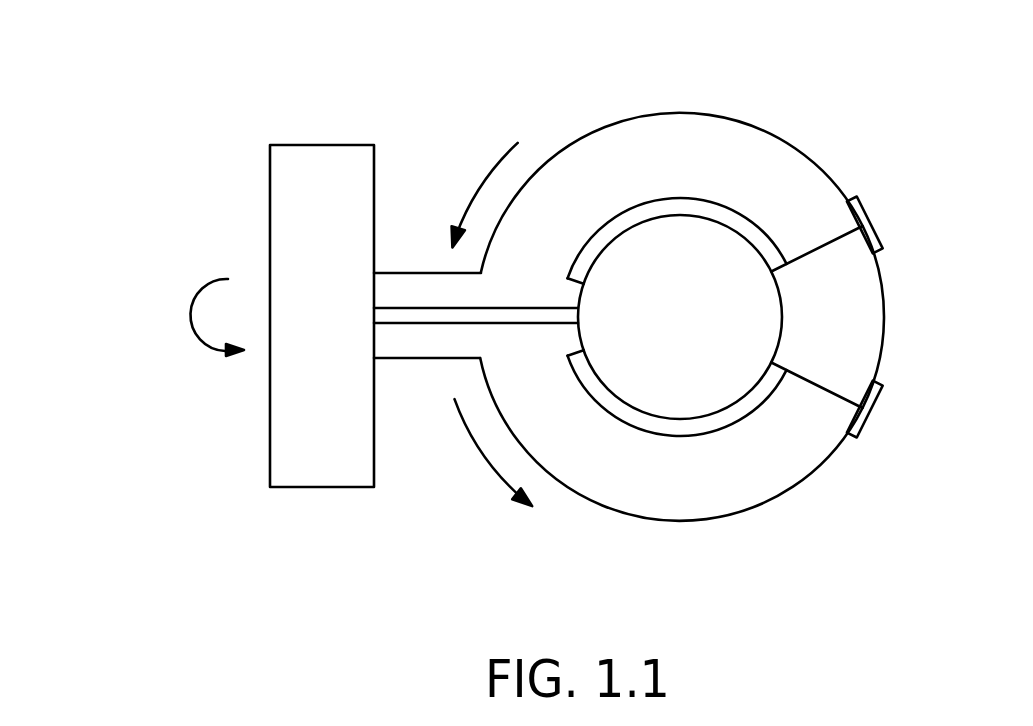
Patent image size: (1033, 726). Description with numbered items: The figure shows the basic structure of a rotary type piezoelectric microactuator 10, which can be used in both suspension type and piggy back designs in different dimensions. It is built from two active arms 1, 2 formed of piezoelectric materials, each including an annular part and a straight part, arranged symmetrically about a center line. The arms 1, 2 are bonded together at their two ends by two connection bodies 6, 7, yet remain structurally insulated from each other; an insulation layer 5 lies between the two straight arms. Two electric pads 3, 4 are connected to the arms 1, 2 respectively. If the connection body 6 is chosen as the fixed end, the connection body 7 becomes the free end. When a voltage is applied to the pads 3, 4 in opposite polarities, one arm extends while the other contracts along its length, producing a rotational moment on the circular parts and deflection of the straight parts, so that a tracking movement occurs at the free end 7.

The active arm 1 is at (557, 178).
The active arm 2 is at (636, 483).
The electric pad 3 is at (878, 230).
The electric pad 4 is at (873, 408).
The insulation layer 5 is at (423, 318).
The connection body 6 is at (682, 233).
The connection body 7 is at (312, 157).
The tracking microactuator 10 is at (145, 289).